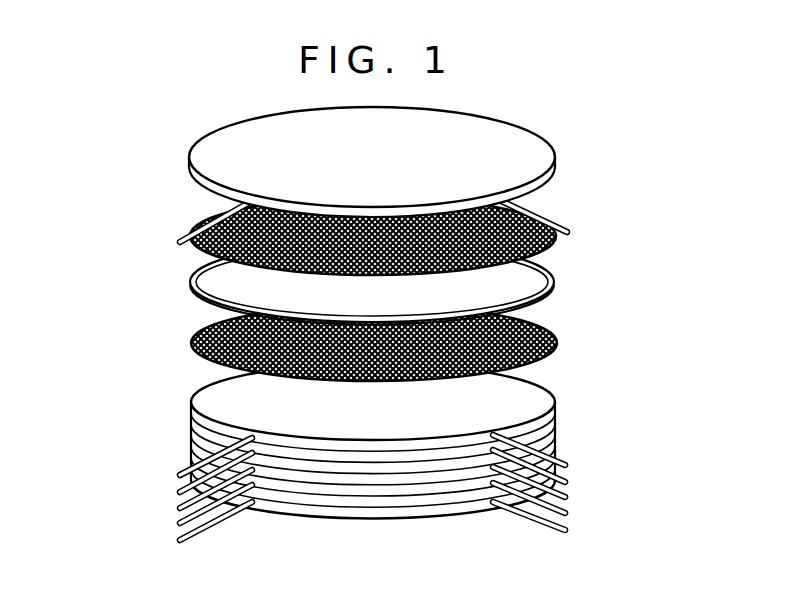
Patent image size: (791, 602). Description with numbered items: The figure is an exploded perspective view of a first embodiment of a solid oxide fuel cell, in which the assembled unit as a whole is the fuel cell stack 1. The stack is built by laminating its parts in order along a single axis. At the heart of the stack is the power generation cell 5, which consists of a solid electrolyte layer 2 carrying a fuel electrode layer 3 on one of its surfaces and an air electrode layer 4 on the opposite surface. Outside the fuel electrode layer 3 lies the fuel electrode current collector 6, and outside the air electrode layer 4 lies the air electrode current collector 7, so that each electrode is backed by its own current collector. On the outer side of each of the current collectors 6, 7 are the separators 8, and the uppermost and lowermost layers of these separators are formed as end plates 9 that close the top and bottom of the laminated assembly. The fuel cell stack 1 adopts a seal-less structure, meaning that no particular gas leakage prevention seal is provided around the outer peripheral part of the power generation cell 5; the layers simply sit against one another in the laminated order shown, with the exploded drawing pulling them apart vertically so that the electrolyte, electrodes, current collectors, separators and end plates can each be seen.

The fuel cell stack 1 is at (138, 283).
The solid electrolyte layer 2 is at (552, 293).
The fuel electrode layer 3 is at (550, 320).
The air electrode layer 4 is at (520, 273).
The power generation cell 5 is at (615, 263).
The fuel electrode current collector 6 is at (550, 345).
The air electrode current collector 7 is at (550, 243).
The separators 8 is at (537, 397).
The end plates 9 is at (500, 132).